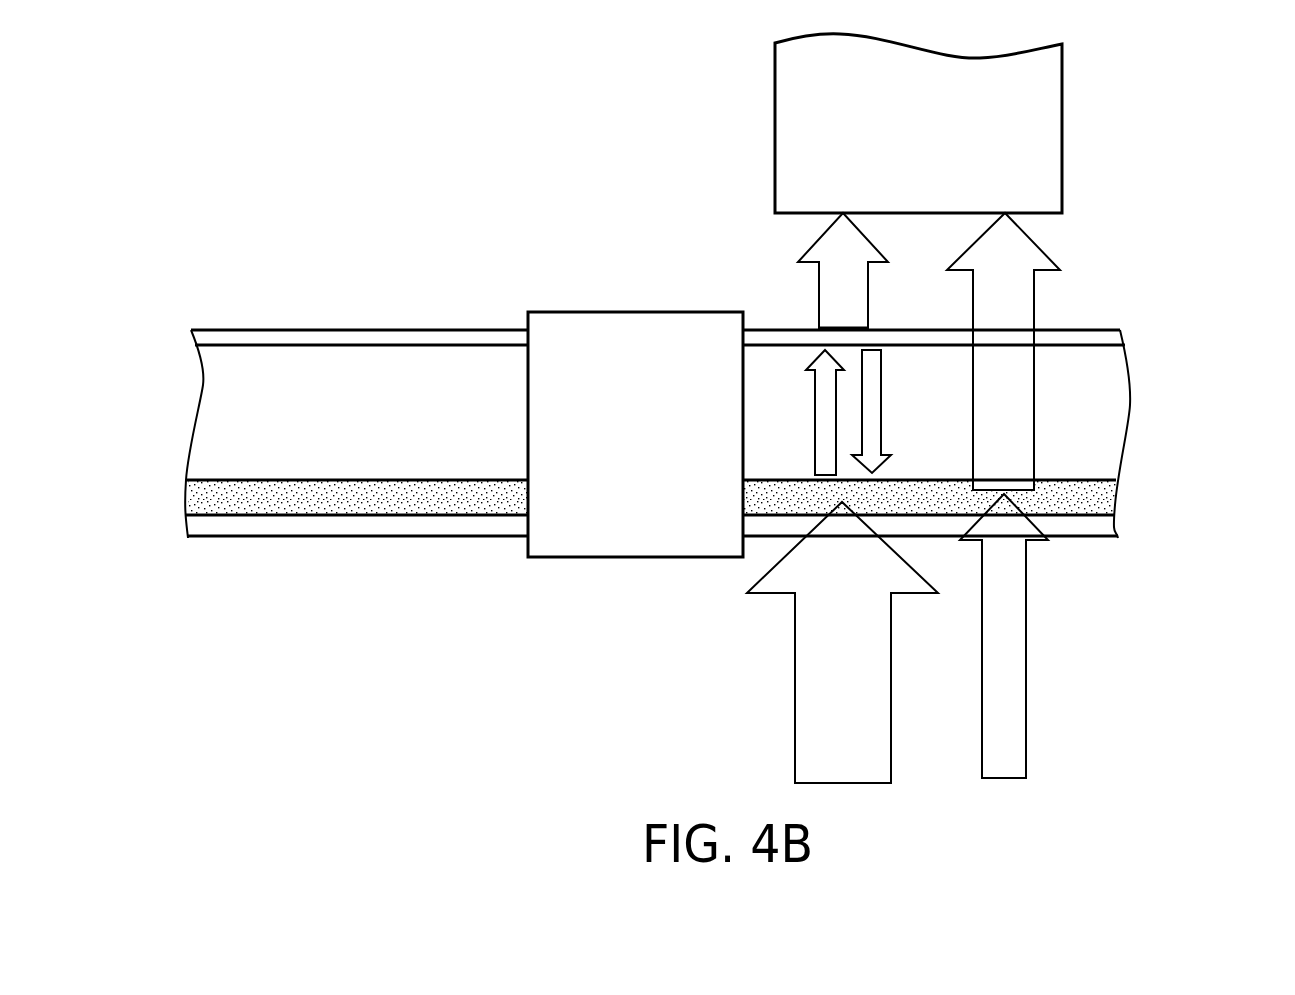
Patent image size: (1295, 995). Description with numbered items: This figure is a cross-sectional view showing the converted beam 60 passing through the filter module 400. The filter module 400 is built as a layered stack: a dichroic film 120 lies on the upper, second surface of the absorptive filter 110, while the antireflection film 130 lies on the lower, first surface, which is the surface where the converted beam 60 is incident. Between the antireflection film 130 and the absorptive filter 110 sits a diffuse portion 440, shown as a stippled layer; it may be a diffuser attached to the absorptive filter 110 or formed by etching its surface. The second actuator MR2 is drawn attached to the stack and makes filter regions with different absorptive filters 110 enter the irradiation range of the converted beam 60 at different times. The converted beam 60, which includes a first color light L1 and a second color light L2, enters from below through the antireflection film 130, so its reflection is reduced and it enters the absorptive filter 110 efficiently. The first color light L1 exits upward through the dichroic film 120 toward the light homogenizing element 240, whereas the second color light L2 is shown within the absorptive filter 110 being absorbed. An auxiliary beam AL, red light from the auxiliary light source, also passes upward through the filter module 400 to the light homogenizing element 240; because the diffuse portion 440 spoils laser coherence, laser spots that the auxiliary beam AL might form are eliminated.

The filter module 400 is at (734, 554).
The light homogenizing element 240 is at (1053, 124).
The dichroic film 120 is at (1108, 340).
The absorptive filter 110 is at (1106, 425).
The diffuse portion 440 is at (1110, 490).
The antireflection film 130 is at (1108, 526).
The converted beam 60 is at (808, 687).
The second actuator MR2 is at (632, 535).
The first color light L1 is at (855, 298).
The second color light L2 is at (815, 415).
The auxiliary beam AL is at (1018, 298).